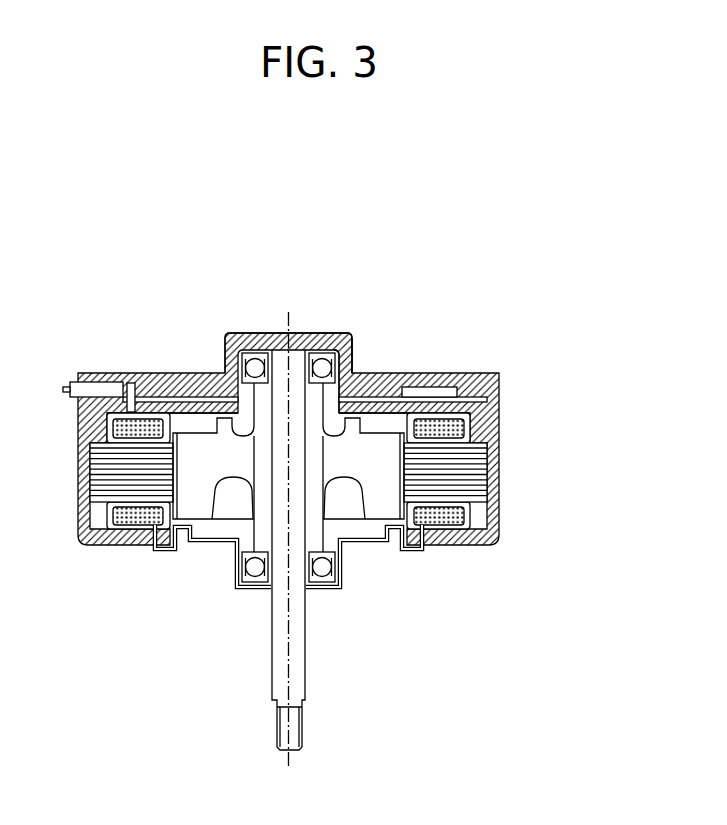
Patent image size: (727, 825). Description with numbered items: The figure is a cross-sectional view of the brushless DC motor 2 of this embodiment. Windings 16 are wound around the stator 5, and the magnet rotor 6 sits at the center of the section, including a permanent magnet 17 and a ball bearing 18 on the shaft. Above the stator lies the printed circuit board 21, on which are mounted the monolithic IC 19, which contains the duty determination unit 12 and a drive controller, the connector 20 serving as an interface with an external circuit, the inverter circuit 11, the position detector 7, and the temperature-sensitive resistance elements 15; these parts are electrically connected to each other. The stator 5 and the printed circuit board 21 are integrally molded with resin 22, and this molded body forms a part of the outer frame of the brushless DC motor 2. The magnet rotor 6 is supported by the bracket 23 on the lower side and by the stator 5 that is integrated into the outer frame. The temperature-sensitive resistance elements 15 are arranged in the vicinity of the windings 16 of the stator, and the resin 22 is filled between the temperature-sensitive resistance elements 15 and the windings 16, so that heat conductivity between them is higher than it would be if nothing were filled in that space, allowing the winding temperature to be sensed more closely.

The brushless DC motor 2 is at (74, 212).
The stator 5 is at (93, 547).
The magnet rotor 6 is at (282, 602).
The position detector 7 is at (170, 398).
The inverter circuit 11 is at (441, 389).
The duty determination unit 12 is at (288, 353).
The temperature-sensitive resistance elements 15 is at (456, 409).
The windings 16 is at (443, 528).
The permanent magnet 17 is at (232, 488).
The ball bearing 18 is at (328, 578).
The monolithic IC 19 is at (196, 382).
The connector 20 is at (73, 381).
The printed circuit board 21 is at (488, 399).
The resin 22 is at (370, 387).
The bracket 23 is at (370, 545).